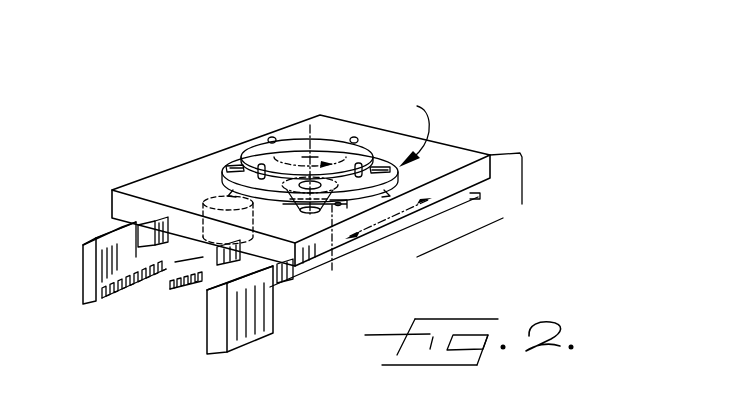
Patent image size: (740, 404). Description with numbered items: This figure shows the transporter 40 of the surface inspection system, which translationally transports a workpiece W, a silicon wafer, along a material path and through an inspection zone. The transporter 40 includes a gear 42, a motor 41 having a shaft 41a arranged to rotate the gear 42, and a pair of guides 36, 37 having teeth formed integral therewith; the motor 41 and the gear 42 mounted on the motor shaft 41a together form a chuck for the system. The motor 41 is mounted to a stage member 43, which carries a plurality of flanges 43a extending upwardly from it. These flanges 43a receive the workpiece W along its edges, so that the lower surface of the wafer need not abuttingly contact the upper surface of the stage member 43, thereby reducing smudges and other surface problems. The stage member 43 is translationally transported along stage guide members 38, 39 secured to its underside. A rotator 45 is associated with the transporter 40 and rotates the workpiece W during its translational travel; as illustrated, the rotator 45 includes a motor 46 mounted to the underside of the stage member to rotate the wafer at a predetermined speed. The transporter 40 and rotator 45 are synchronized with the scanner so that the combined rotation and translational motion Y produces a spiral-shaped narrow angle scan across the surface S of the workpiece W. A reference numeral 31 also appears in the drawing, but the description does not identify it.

The Y-axis table plate 31 is at (470, 157).
The guide 36 is at (508, 176).
The guide 37 is at (90, 262).
The stage guide member 38 is at (467, 192).
The stage guide member 39 is at (278, 280).
The transporter 40 is at (537, 116).
The motor 41 is at (203, 203).
The shaft 41a is at (222, 256).
The gear 42 is at (187, 268).
The stage member 43 is at (214, 175).
The flange 43a is at (362, 164).
The rotator 45 is at (408, 124).
The motor 46 is at (333, 258).
The workpiece W is at (240, 180).
The surface S is at (305, 143).
The translational motion Y is at (405, 214).